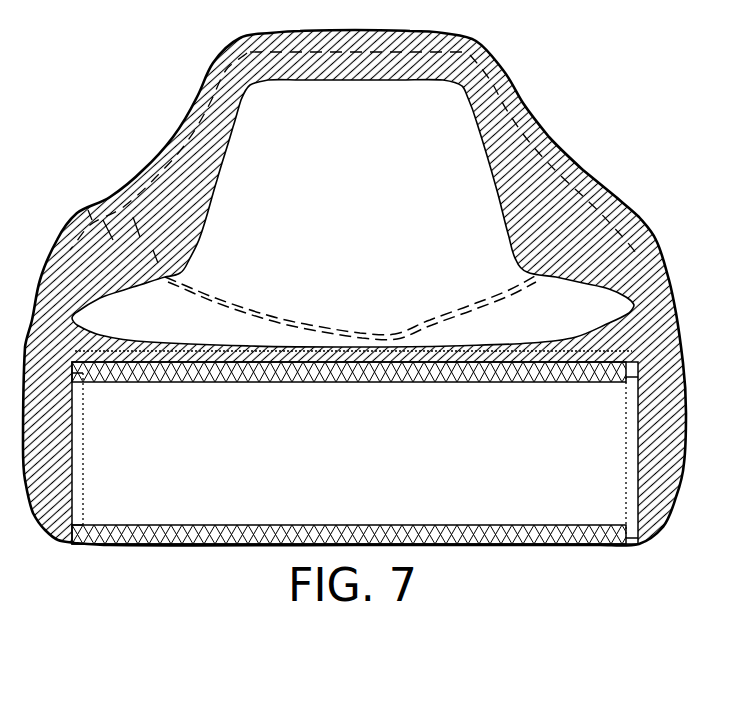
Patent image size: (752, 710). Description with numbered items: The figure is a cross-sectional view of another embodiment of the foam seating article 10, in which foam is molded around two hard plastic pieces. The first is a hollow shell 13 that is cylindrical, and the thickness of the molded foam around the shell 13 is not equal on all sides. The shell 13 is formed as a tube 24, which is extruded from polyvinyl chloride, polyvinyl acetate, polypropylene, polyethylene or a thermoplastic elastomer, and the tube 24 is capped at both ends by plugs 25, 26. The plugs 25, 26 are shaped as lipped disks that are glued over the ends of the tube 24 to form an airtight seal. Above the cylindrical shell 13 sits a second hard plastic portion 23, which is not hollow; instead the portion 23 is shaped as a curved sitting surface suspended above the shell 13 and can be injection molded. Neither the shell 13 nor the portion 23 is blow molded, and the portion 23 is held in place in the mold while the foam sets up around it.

The foam seating article 10 is at (138, 108).
The second hard plastic portion 23 is at (366, 225).
The hollow shell 13 is at (370, 460).
The plug 26 is at (510, 383).
The plug 25 is at (506, 525).
The tube 24 is at (626, 456).